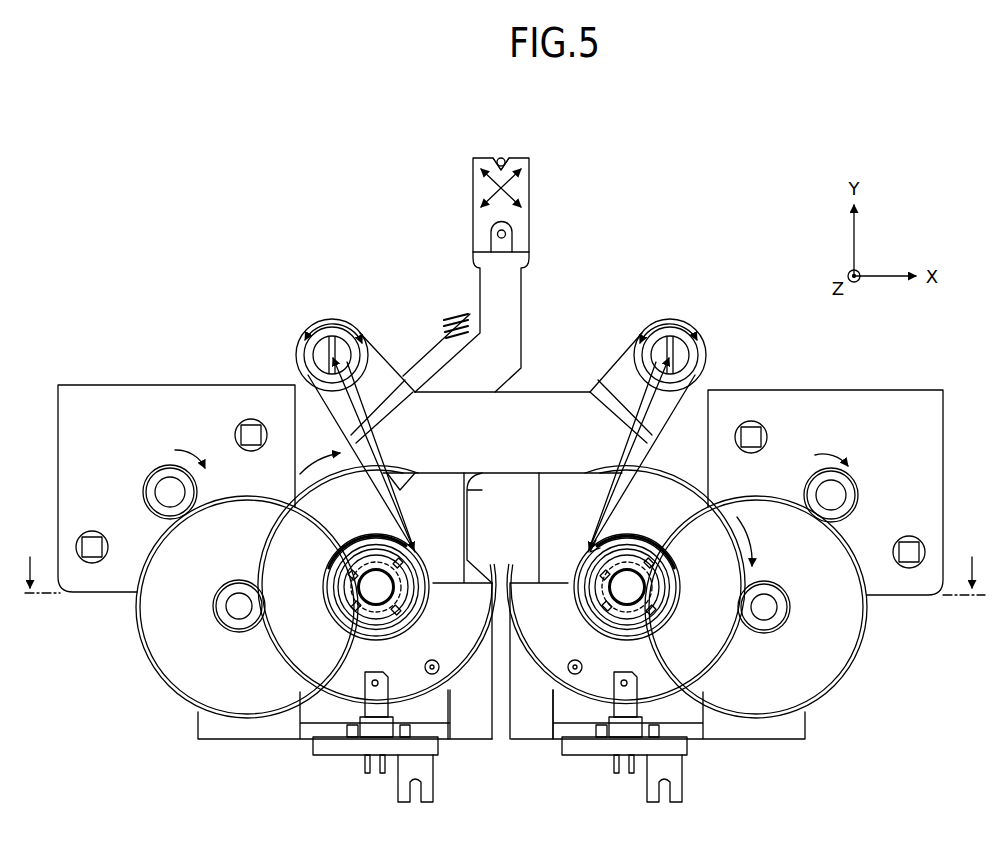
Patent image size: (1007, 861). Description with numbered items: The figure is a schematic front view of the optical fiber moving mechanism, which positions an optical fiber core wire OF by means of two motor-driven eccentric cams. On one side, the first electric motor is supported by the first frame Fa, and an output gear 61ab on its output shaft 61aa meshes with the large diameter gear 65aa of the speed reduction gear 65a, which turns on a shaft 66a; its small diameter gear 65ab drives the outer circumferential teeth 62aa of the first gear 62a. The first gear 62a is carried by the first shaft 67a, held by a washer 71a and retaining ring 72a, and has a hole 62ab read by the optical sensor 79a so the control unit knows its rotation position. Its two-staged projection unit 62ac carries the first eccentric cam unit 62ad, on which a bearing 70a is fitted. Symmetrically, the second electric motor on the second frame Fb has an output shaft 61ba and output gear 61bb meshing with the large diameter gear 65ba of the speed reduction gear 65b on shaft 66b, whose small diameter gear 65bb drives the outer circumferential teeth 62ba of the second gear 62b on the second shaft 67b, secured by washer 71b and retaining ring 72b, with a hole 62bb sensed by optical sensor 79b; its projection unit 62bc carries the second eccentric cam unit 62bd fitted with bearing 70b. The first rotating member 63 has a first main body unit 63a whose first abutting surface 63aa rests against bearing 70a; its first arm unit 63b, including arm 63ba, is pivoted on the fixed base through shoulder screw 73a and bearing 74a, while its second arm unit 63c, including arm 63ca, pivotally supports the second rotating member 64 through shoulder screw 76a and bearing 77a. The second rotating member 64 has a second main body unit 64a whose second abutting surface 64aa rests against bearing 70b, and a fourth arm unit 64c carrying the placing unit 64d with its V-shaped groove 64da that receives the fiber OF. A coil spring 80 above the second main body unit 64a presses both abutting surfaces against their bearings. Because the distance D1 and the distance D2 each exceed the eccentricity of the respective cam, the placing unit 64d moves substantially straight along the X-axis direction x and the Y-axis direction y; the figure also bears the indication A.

The output shaft 61aa is at (836, 493).
The output gear 61ab is at (853, 499).
The output shaft 61ba is at (170, 490).
The output gear 61bb is at (150, 494).
The first gear 62a is at (722, 702).
The outer circumferential teeth 62aa is at (714, 666).
The hole 62ab is at (573, 660).
The projection unit 62ac is at (666, 614).
The first eccentric cam unit 62ad is at (668, 578).
The second gear 62b is at (282, 674).
The outer circumferential teeth 62ba is at (291, 662).
The hole 62bb is at (435, 660).
The projection unit 62bc is at (424, 607).
The second eccentric cam unit 62bd is at (345, 582).
The first rotating member 63 is at (630, 490).
The first main body unit 63a is at (575, 503).
The first abutting surface 63aa is at (613, 517).
The first arm unit 63b is at (648, 308).
The arm 63ba is at (676, 318).
The second arm unit 63c is at (305, 318).
The arm 63ca is at (335, 318).
The second rotating member 64 is at (514, 377).
The second main body unit 64a is at (440, 497).
The second abutting surface 64aa is at (392, 520).
The fourth arm unit 64c is at (528, 288).
The placing unit 64d is at (532, 195).
The V-shaped groove 64da is at (510, 160).
The speed reduction gear 65a is at (860, 690).
The large diameter gear 65aa is at (868, 622).
The small diameter gear 65ab is at (790, 606).
The speed reduction gear 65b is at (165, 690).
The large diameter gear 65ba is at (137, 628).
The small diameter gear 65bb is at (214, 606).
The shaft 66a is at (766, 612).
The shaft 66b is at (239, 606).
The first shaft 67a is at (643, 572).
The second shaft 67b is at (360, 575).
The bearing 70a is at (677, 592).
The bearing 70b is at (352, 600).
The washer 71a is at (582, 588).
The washer 71b is at (393, 620).
The retaining ring 72a is at (630, 612).
The retaining ring 72b is at (375, 608).
The shoulder screw 73a is at (683, 350).
The bearing 74a is at (700, 360).
The shoulder screw 76a is at (312, 362).
The bearing 77a is at (320, 347).
The optical sensor 79a is at (620, 698).
The optical sensor 79b is at (372, 698).
The coil spring 80 is at (452, 316).
The first frame Fa is at (905, 390).
The second frame Fb is at (95, 385).
The optical fiber core wire OF is at (500, 158).
The distance D1 is at (650, 405).
The distance D2 is at (366, 430).
The section line A is at (504, 563).
The X-axis direction x is at (462, 162).
The Y-axis direction y is at (542, 162).